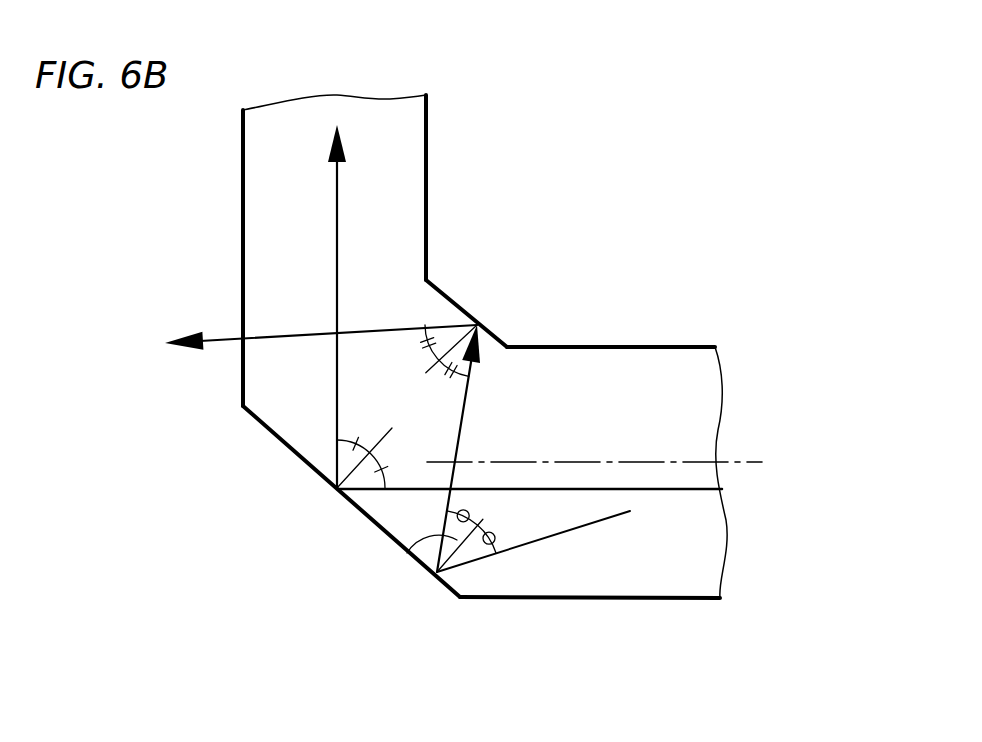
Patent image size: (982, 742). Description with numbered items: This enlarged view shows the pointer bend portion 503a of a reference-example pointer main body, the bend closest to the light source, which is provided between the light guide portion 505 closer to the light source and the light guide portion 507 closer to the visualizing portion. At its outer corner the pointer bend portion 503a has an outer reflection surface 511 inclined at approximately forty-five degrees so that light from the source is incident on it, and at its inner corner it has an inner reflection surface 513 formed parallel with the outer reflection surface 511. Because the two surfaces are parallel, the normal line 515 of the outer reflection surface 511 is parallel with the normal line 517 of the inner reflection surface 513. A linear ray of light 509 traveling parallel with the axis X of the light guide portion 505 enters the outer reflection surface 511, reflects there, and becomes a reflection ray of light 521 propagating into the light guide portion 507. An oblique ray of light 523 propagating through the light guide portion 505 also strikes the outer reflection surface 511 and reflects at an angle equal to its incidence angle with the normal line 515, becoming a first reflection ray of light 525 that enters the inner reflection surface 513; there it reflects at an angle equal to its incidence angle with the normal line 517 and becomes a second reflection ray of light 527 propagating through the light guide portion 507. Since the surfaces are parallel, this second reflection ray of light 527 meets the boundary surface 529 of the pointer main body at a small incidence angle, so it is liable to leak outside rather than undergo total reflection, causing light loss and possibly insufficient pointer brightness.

The pointer bend portion 503a is at (485, 245).
The light guide portion 505 is at (692, 347).
The light guide portion 507 is at (243, 137).
The linear ray of light 509 is at (706, 489).
The axis X is at (650, 462).
The outer reflection surface 511 is at (258, 420).
The inner reflection surface 513 is at (434, 292).
The normal line 515 is at (337, 463).
The normal line 517 is at (458, 306).
The reflection ray of light 521 is at (340, 175).
The oblique ray of light 523 is at (587, 526).
The first reflection ray of light 525 is at (495, 398).
The second reflection ray of light 527 is at (305, 333).
The boundary surface 529 is at (243, 325).